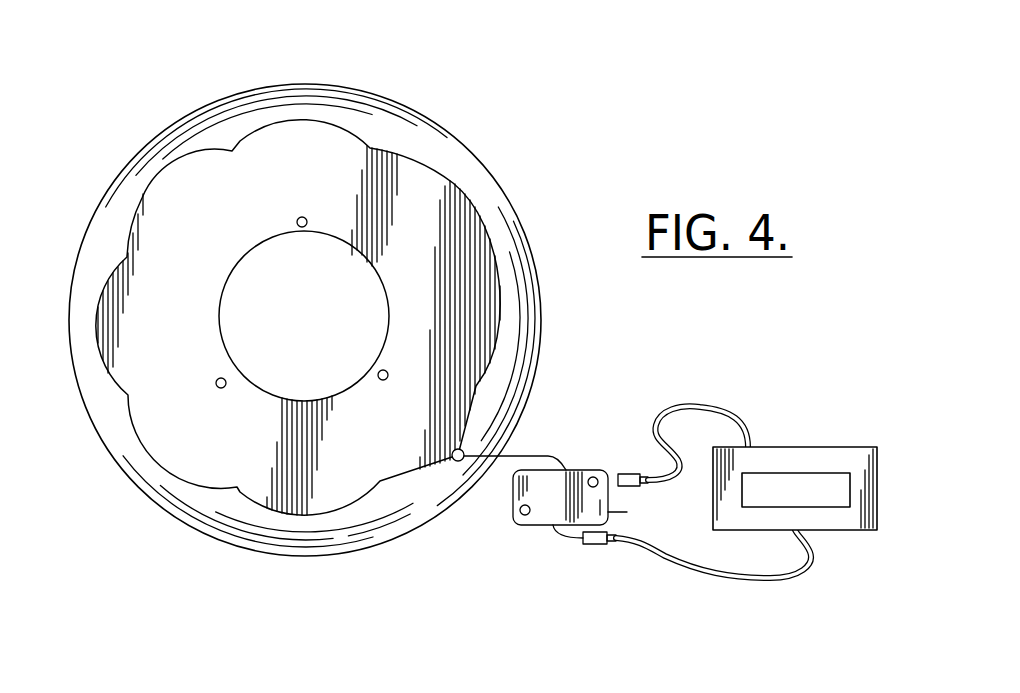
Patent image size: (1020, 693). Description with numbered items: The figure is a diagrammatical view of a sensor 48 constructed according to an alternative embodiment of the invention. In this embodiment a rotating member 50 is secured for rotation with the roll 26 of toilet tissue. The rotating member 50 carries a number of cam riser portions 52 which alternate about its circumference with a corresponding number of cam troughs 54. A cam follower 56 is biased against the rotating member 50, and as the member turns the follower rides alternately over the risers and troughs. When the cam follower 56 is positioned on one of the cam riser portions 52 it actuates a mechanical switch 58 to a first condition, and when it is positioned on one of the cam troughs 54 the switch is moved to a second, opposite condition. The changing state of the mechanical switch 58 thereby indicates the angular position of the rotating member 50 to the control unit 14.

The control unit 14 is at (815, 455).
The roll of toilet tissue 26 is at (410, 110).
The sensor 48 is at (597, 346).
The rotating member 50 is at (287, 121).
The cam riser portions 52 is at (450, 183).
The cam troughs 54 is at (477, 243).
The cam follower 56 is at (460, 461).
The mechanical switch 58 is at (570, 471).